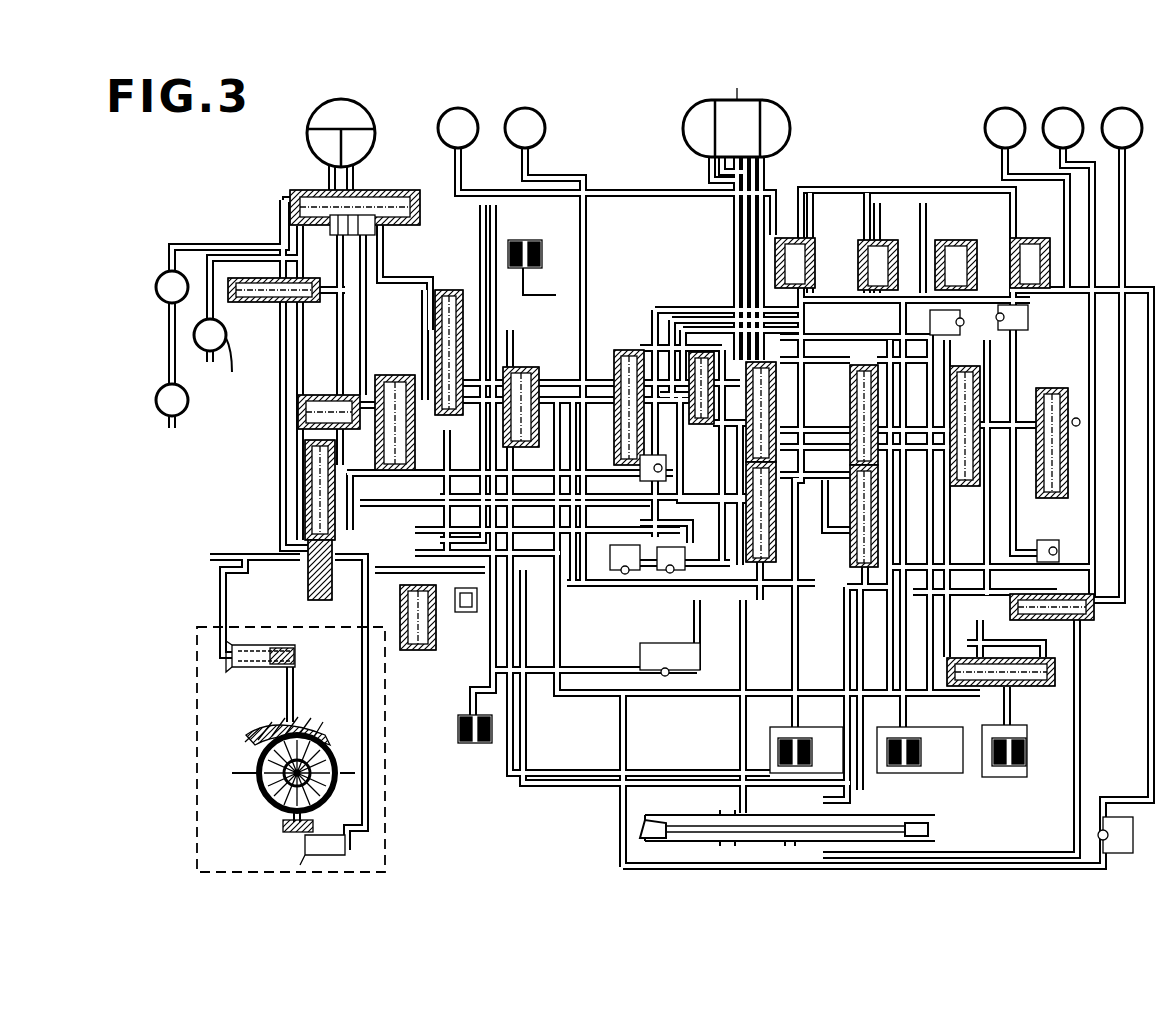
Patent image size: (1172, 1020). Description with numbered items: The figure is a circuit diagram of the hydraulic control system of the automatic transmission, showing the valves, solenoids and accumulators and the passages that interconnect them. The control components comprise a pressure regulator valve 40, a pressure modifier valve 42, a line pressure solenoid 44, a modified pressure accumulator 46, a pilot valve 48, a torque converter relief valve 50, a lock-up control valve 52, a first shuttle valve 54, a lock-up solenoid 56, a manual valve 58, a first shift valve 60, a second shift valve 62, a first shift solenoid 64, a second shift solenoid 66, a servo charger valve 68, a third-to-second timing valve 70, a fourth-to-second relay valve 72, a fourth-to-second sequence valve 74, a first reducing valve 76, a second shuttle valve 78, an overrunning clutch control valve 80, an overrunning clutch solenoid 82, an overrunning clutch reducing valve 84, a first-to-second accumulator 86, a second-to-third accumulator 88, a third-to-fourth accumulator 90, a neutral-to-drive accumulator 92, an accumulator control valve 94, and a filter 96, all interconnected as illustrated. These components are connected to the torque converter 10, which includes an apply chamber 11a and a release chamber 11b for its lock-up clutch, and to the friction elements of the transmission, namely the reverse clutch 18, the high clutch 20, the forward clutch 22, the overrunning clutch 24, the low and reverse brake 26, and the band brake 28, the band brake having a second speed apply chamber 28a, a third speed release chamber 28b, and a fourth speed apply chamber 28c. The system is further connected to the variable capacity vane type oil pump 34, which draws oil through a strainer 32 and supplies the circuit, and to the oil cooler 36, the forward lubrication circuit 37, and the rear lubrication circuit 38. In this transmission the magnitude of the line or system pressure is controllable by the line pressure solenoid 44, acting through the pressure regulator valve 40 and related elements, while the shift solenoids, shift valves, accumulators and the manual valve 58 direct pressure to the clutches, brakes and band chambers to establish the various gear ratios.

The torque converter 10 is at (366, 102).
The apply chamber 11a is at (372, 144).
The release chamber 11b is at (308, 146).
The reverse clutch 18 is at (468, 108).
The high clutch 20 is at (533, 108).
The forward clutch 22 is at (1013, 108).
The overrunning clutch 24 is at (1071, 108).
The low and reverse brake 26 is at (1130, 108).
The band brake 28 is at (785, 100).
The second speed apply chamber 28a is at (685, 132).
The third speed release chamber 28b is at (739, 82).
The fourth speed apply chamber 28c is at (792, 128).
The oil strainer 32 is at (300, 668).
The variable capacity vane type oil pump 34 is at (268, 812).
The oil cooler 36 is at (156, 288).
The forward lubrication circuit 37 is at (229, 354).
The rear lubrication circuit 38 is at (157, 390).
The pressure regulator valve 40 is at (305, 585).
The pressure modifier valve 42 is at (394, 372).
The line pressure solenoid 44 is at (462, 750).
The modified pressure accumulator 46 is at (326, 392).
The pilot valve 48 is at (438, 650).
The torque converter relief valve 50 is at (304, 302).
The lock-up control valve 52 is at (415, 235).
The first shuttle valve 54 is at (628, 465).
The lock-up solenoid 56 is at (550, 255).
The manual valve 58 is at (870, 812).
The first shift valve 60 is at (852, 368).
The second shift valve 62 is at (783, 357).
The first shift solenoid 64 is at (922, 748).
The second shift solenoid 66 is at (814, 740).
The servo charger valve 68 is at (432, 318).
The 3-2 timing valve 70 is at (703, 430).
The 4-2 relay valve 72 is at (855, 578).
The 4-2 sequence valve 74 is at (780, 548).
The first reducing valve 76 is at (1085, 595).
The second shuttle valve 78 is at (990, 688).
The overrunning clutch control valve 80 is at (982, 462).
The overrunning clutch solenoid 82 is at (1010, 768).
The overrunning clutch reducing valve 84 is at (1052, 385).
The 1-2 accumulator 86 is at (888, 252).
The 2-3 accumulator 88 is at (962, 248).
The 3-4 accumulator 90 is at (810, 260).
The N-D accumulator 92 is at (1040, 245).
The accumulator control valve 94 is at (523, 363).
The filter 96 is at (466, 612).